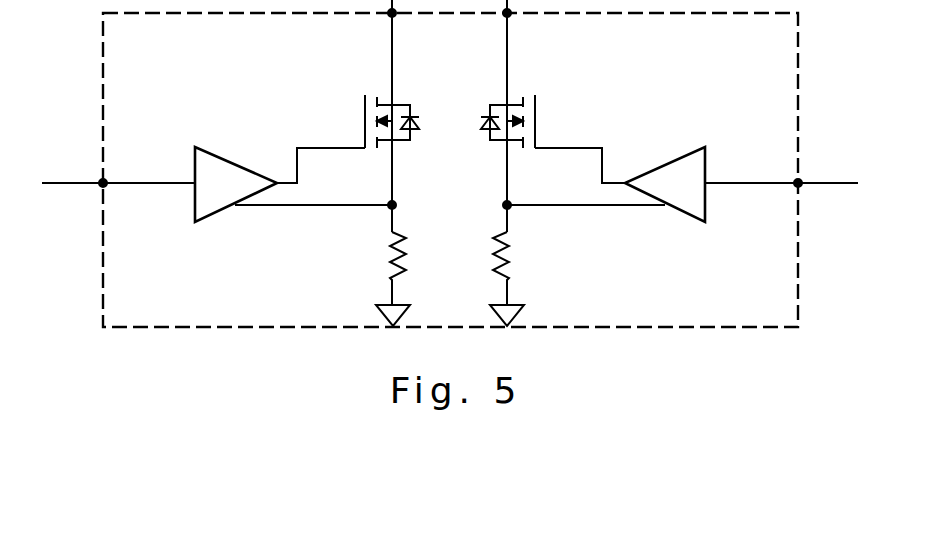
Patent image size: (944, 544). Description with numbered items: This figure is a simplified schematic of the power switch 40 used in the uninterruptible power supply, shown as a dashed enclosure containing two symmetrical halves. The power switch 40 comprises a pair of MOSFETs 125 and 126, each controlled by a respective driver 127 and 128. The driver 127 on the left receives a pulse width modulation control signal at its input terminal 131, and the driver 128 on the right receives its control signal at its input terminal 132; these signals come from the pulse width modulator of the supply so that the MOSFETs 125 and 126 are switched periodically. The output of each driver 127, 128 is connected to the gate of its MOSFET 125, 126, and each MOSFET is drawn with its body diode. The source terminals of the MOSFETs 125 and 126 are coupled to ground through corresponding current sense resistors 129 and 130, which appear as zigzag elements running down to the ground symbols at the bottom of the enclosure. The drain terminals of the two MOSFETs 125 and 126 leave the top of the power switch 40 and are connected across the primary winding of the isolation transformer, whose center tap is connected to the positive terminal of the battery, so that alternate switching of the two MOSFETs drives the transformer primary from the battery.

The power switch 40 is at (802, 74).
The MOSFET 125 is at (391, 106).
The MOSFET 126 is at (509, 106).
The driver 127 is at (220, 157).
The driver 128 is at (668, 163).
The current sense resistor 129 is at (391, 271).
The current sense resistor 130 is at (508, 261).
The input terminal 131 is at (102, 182).
The input terminal 132 is at (803, 180).